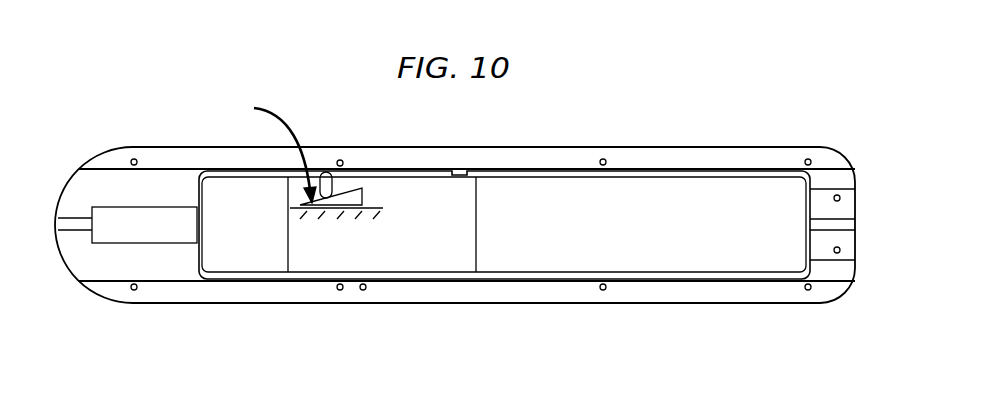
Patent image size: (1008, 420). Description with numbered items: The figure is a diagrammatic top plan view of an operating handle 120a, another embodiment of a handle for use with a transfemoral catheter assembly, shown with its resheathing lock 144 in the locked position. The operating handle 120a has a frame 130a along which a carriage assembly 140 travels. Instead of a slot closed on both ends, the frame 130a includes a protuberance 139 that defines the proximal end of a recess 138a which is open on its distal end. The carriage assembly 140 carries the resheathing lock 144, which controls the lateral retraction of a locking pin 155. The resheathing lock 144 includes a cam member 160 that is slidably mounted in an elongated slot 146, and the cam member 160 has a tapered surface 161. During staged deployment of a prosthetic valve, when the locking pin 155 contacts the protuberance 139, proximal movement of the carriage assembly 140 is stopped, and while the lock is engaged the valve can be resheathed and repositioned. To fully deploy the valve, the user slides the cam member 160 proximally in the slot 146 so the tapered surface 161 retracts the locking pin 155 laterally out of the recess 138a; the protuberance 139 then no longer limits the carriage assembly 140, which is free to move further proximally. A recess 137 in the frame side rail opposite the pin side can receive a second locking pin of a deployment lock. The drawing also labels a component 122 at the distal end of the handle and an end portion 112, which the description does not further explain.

The operating handle 120a is at (157, 133).
The frame 130a is at (707, 145).
The end compartment 112 is at (853, 277).
The connector 122 is at (74, 232).
The recess 138a is at (407, 172).
The protuberance 139 is at (462, 172).
The carriage assembly 140 is at (478, 223).
The resheathing lock 144 is at (272, 148).
The elongated slot 146 is at (357, 209).
The locking pin 155 is at (328, 172).
The cam member 160 is at (368, 192).
The tapered surface 161 is at (291, 200).
The recess 137 is at (363, 291).